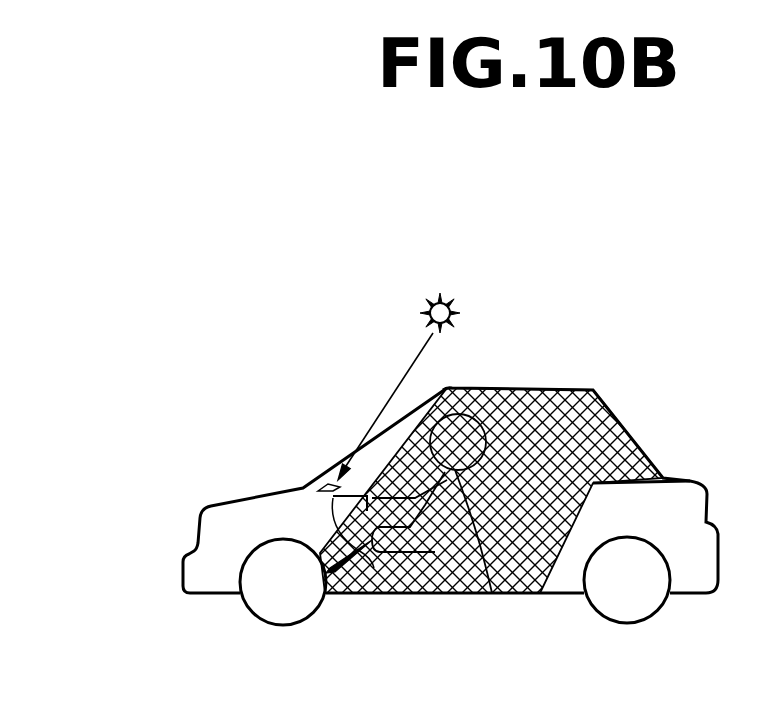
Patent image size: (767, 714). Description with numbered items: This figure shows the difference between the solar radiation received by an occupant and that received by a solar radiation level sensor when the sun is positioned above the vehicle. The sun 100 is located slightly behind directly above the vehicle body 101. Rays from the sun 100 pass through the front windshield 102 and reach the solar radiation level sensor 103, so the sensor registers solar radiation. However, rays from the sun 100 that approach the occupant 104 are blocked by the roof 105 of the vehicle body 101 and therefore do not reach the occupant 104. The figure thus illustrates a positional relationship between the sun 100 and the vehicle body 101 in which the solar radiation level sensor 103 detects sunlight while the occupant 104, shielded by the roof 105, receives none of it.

The sun 100 is at (434, 292).
The vehicle body 101 is at (643, 438).
The front windshield 102 is at (421, 404).
The solar radiation level sensor 103 is at (370, 597).
The occupant 104 is at (491, 594).
The roof 105 is at (553, 388).